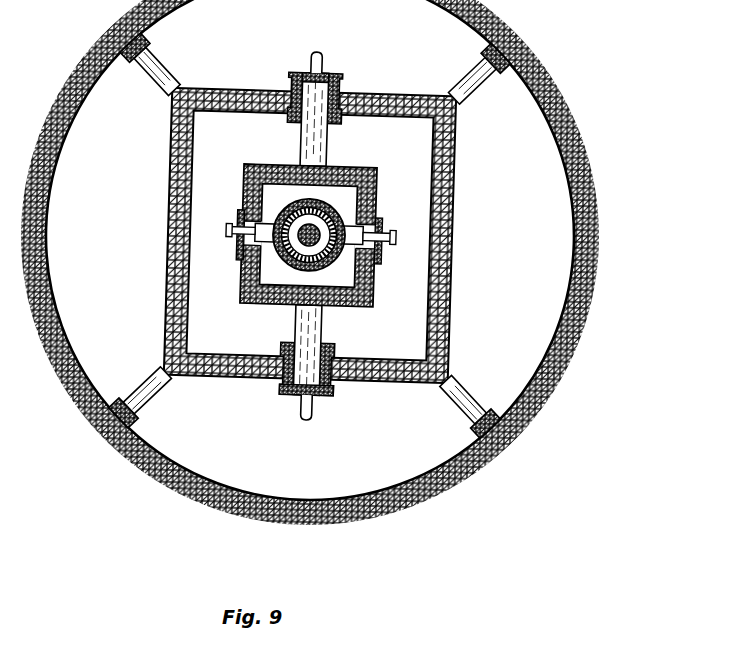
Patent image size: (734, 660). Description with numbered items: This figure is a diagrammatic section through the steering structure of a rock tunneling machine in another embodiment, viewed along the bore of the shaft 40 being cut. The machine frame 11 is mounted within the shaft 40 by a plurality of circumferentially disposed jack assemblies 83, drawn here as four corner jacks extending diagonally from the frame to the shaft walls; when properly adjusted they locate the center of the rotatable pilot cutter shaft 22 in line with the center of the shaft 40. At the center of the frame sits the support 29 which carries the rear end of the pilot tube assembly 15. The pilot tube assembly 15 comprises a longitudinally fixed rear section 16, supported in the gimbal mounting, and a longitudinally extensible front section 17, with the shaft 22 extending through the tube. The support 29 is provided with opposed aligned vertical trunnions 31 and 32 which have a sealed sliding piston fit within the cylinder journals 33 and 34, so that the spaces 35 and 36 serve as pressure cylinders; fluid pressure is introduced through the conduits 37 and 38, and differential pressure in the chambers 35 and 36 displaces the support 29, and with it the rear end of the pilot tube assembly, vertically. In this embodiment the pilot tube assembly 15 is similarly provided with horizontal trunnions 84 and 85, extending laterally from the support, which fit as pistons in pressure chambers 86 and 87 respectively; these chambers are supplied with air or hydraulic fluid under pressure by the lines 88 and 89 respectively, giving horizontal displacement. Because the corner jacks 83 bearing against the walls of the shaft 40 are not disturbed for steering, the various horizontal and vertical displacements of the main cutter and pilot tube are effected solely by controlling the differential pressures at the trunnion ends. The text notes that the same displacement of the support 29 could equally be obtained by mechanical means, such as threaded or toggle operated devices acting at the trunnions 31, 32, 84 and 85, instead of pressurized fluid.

The frame 11 is at (458, 203).
The pilot tube assembly 15 is at (339, 221).
The rear section 16 is at (287, 249).
The front section 17 is at (287, 258).
The rotatable shaft 22 is at (306, 228).
The support 29 is at (376, 291).
The vertical trunnion 31 is at (297, 321).
The vertical trunnion 32 is at (327, 142).
The cylinder journal 33 is at (318, 399).
The cylinder journal 34 is at (331, 74).
The pressure chamber 35 is at (284, 392).
The pressure chamber 36 is at (304, 73).
The conduit 37 is at (306, 418).
The conduit 38 is at (318, 56).
The shaft 40 is at (538, 98).
The jack assemblies 83 is at (171, 67).
The horizontal trunnion 84 is at (240, 211).
The horizontal trunnion 85 is at (382, 216).
The pressure chamber 86 is at (379, 262).
The pressure chamber 87 is at (245, 243).
The line 88 is at (229, 232).
The line 89 is at (393, 236).